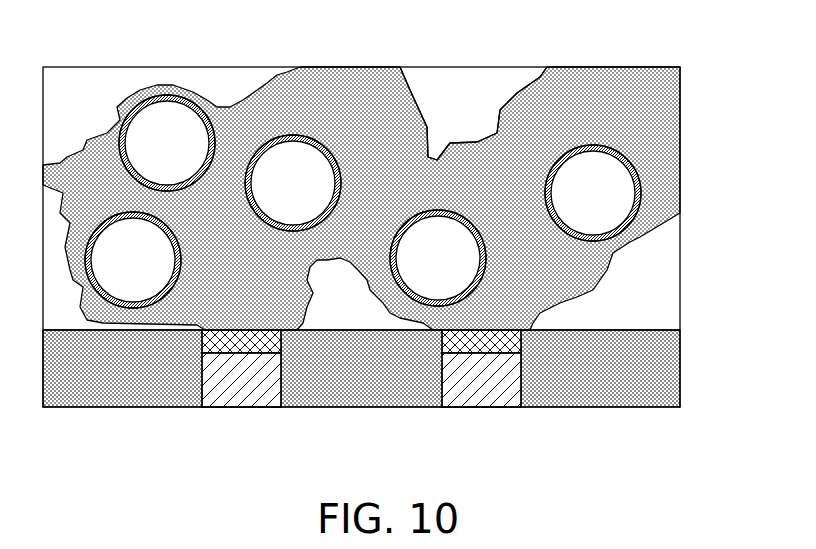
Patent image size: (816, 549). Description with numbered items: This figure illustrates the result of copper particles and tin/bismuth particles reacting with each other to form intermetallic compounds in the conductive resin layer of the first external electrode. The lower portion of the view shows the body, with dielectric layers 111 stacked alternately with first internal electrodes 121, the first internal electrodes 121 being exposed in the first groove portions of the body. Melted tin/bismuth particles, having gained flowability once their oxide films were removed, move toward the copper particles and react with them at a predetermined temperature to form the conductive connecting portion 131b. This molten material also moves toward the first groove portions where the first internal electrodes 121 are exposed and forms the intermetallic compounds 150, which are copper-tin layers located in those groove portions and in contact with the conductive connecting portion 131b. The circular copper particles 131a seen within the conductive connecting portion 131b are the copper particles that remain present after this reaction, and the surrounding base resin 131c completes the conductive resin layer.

The dielectric layer 111 is at (337, 392).
The first internal electrode 121 is at (503, 395).
The intermetallic compound 150 is at (445, 343).
The copper particle 131a is at (167, 110).
The conductive connecting portion 131b is at (642, 134).
The base resin 131c is at (465, 97).